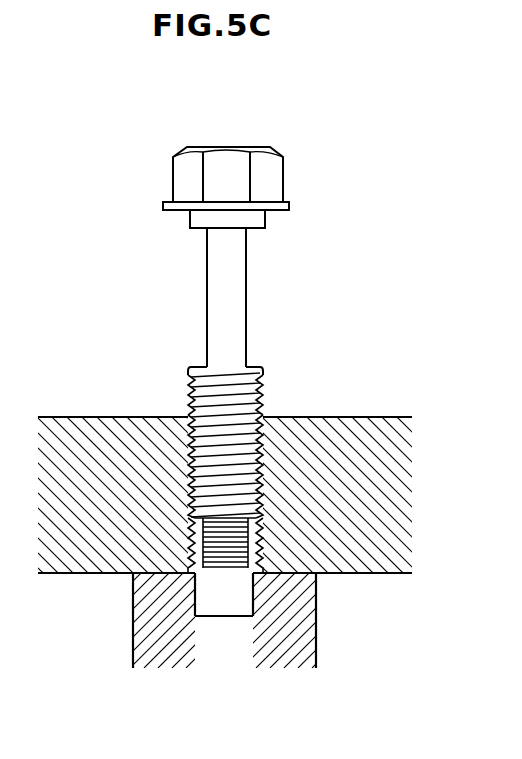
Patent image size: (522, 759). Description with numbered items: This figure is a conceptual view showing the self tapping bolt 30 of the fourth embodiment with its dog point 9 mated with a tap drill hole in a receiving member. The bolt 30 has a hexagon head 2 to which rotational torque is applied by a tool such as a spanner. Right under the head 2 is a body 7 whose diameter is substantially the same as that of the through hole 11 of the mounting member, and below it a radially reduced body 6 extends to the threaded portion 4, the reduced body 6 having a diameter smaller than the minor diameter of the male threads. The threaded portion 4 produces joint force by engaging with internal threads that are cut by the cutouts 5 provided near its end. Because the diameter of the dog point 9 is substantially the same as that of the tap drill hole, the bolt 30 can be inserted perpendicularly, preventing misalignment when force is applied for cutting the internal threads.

The self tapping bolt 30 is at (292, 164).
The head 2 is at (268, 180).
The body 7 is at (262, 222).
The radially reduced body 6 is at (241, 317).
The threaded portion 4 is at (270, 402).
The through hole 11 is at (205, 440).
The cutouts 5 is at (188, 548).
The dog point 9 is at (235, 593).